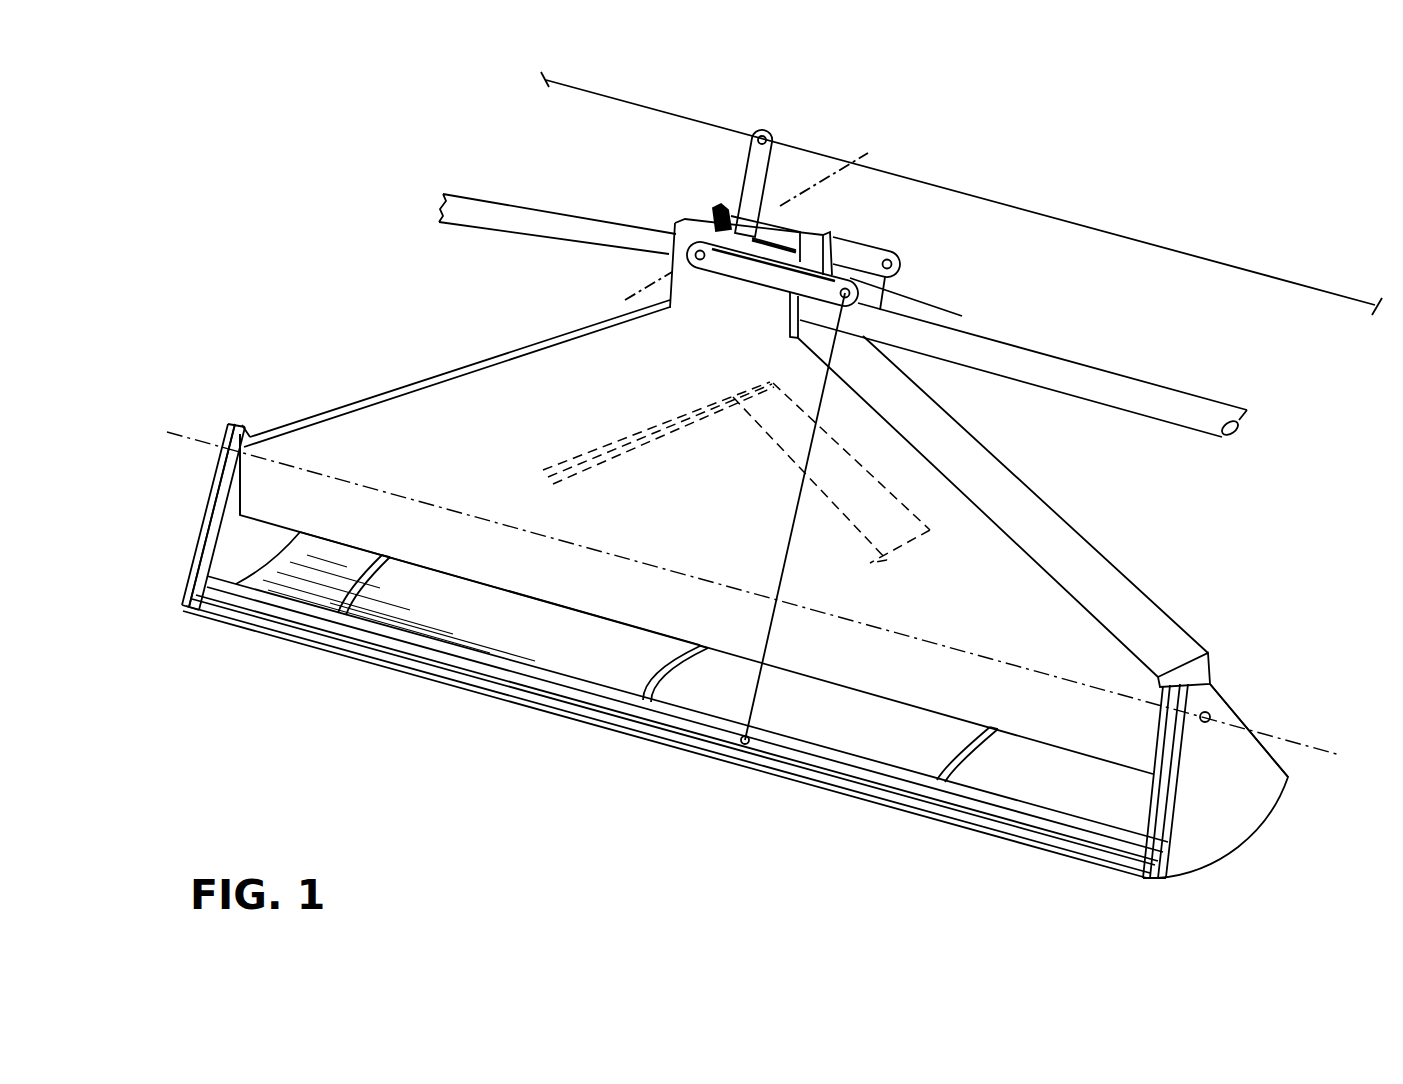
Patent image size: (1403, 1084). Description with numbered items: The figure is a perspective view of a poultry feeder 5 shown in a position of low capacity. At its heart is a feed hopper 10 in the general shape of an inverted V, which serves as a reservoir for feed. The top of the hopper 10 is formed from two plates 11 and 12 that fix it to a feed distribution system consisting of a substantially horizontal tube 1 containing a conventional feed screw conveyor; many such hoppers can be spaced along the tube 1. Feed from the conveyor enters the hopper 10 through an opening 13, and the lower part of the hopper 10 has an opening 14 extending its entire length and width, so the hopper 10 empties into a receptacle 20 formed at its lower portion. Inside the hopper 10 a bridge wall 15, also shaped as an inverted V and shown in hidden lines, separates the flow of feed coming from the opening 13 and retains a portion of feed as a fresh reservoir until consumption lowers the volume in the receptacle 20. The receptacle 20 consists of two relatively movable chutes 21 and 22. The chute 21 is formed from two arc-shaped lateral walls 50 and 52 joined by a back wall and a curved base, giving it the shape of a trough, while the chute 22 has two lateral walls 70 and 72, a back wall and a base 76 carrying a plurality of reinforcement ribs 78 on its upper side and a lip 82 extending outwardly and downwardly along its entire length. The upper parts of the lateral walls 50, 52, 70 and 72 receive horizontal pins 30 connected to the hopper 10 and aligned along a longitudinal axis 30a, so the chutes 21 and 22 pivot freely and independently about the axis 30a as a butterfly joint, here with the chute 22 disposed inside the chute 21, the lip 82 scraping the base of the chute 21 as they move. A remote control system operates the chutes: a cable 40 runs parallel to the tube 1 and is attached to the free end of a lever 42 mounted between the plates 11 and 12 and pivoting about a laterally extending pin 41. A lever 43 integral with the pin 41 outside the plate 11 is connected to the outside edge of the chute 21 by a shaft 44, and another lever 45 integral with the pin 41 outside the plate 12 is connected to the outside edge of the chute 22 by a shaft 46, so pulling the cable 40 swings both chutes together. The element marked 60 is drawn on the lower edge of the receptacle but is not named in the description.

The tube 1 is at (490, 203).
The feeder 5 is at (1183, 183).
The feed hopper 10 is at (1035, 472).
The plate 11 is at (788, 210).
The plate 12 is at (675, 240).
The opening 13 is at (720, 207).
The opening 14 is at (648, 635).
The bridge wall 15 is at (646, 434).
The receptacle 20 is at (788, 808).
The chute 21 is at (1236, 801).
The chute 22 is at (720, 690).
The pin 30 is at (1203, 715).
The longitudinal axis 30a is at (190, 434).
The cable 40 is at (640, 105).
The pin 41 is at (822, 186).
The lever 42 is at (760, 157).
The lever 43 is at (868, 256).
The shaft 44 is at (886, 290).
The lever 45 is at (757, 273).
The shaft 46 is at (783, 572).
The lateral wall 50 is at (1243, 752).
The lateral wall 52 is at (213, 498).
The cutting edge 60 is at (992, 826).
The lateral wall 70 is at (1148, 798).
The lateral wall 72 is at (212, 557).
The base 76 is at (806, 719).
The reinforcement ribs 78 is at (378, 556).
The lip 82 is at (486, 675).